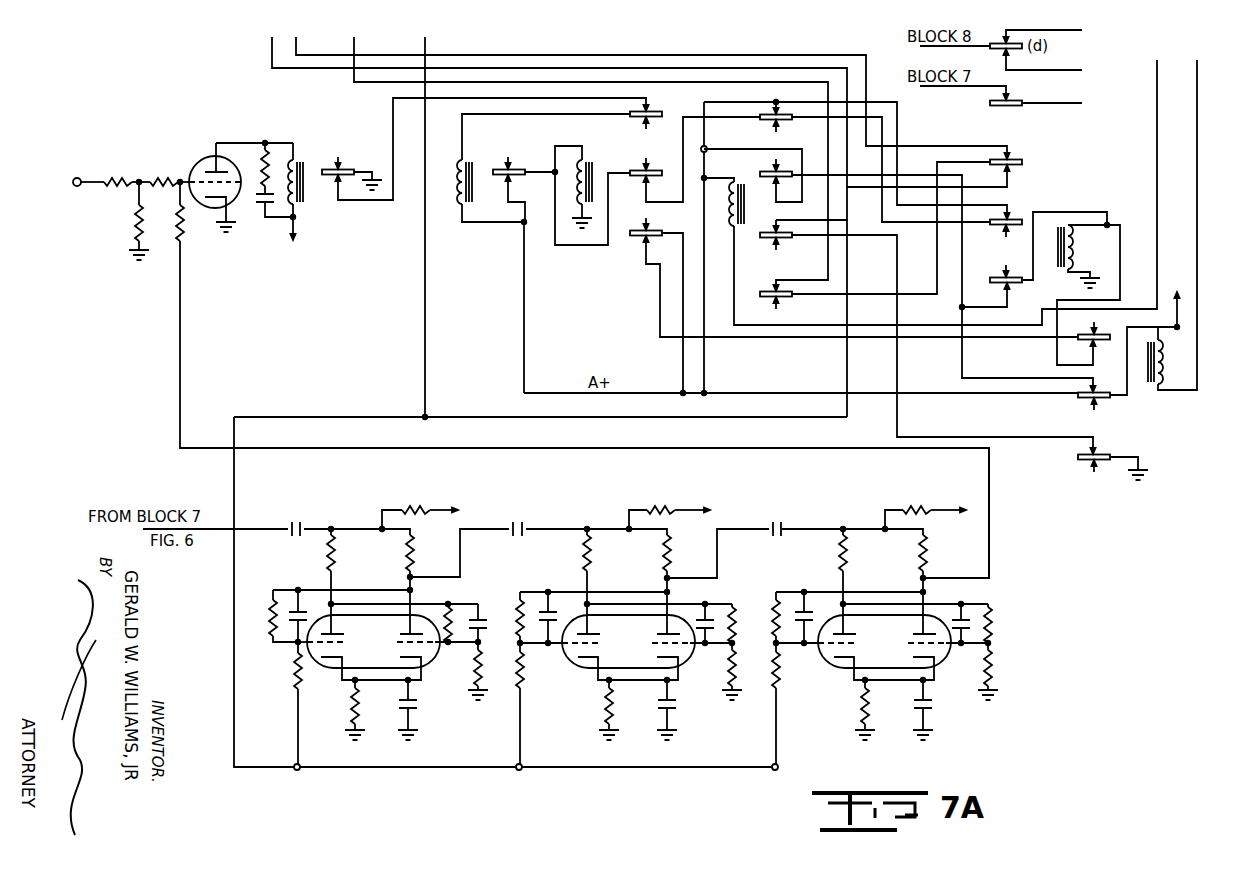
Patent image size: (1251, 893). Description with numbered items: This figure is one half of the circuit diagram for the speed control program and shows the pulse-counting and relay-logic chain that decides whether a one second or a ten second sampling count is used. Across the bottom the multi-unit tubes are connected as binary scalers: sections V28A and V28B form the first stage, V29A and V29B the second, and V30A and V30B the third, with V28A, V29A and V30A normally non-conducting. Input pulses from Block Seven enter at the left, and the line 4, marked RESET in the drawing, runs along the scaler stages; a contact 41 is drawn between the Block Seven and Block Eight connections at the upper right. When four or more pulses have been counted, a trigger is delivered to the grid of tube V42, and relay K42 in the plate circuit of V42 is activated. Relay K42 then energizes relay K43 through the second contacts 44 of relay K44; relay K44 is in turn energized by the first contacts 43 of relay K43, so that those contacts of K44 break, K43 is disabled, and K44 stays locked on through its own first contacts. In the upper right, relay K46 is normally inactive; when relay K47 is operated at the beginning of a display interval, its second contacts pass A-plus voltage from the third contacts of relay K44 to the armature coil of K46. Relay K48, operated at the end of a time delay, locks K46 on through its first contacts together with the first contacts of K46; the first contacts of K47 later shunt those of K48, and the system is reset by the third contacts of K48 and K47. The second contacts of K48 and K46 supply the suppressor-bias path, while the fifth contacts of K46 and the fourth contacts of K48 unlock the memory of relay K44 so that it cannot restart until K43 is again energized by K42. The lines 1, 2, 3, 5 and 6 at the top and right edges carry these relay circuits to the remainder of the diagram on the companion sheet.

The input line 1 is at (638, 216).
The input line 2 is at (650, 87).
The input line 3 is at (588, 153).
The reset line 4 is at (540, 218).
The line 5 is at (948, 180).
The line 6 is at (1180, 213).
The relay contact 41 is at (1001, 94).
The relay 43 is at (531, 174).
The relay contacts 44 is at (854, 240).
The tube V42 is at (515, 360).
The relay K42 is at (432, 175).
The relay K43 is at (543, 253).
The relay K44 is at (592, 189).
The relay K46 is at (1055, 263).
The relay K47 is at (1130, 386).
The relay K48 is at (898, 276).
The binary scaler tube section V28A is at (342, 649).
The binary scaler tube section V28B is at (406, 614).
The binary scaler tube section V29A is at (605, 649).
The binary scaler tube section V29B is at (647, 614).
The binary scaler tube section V30A is at (861, 649).
The binary scaler tube section V30B is at (890, 594).